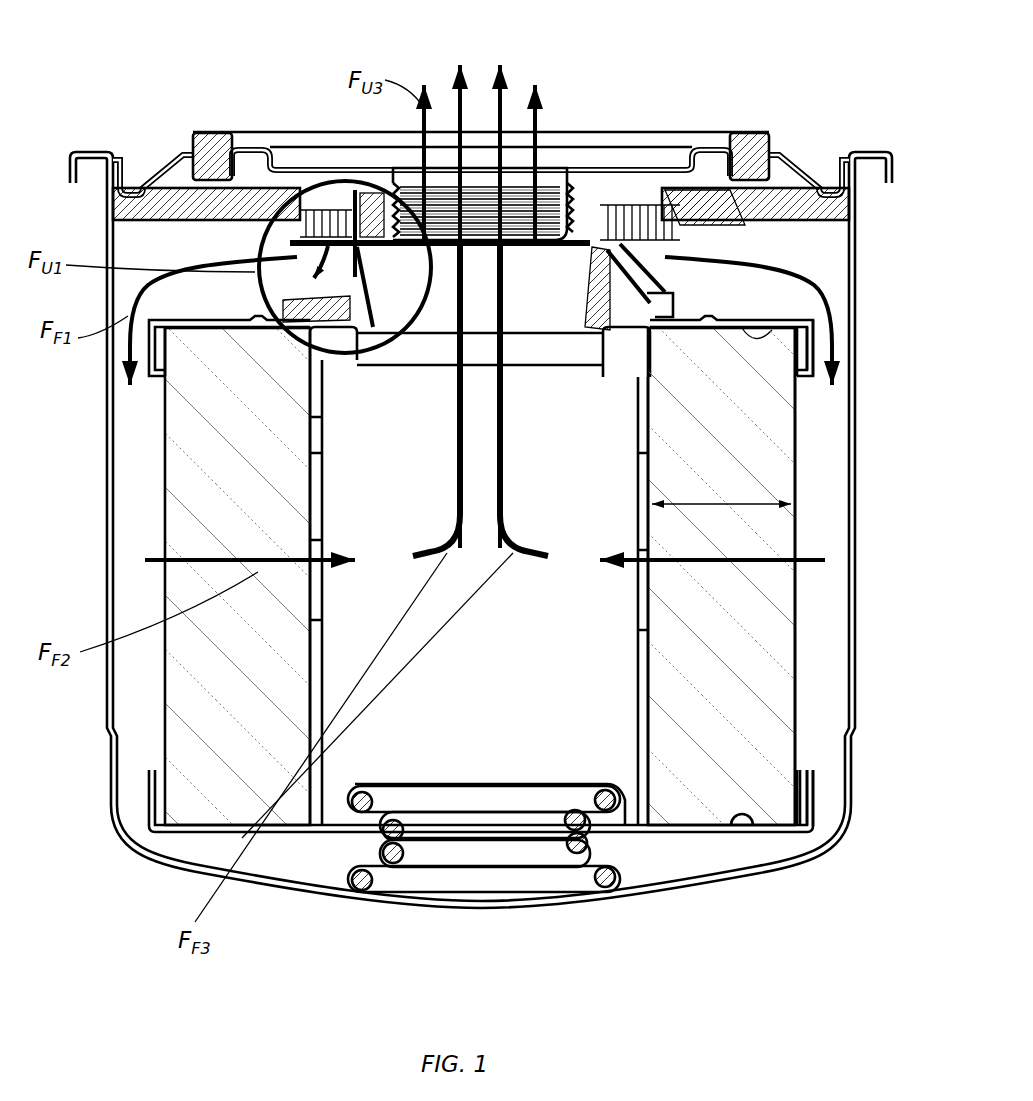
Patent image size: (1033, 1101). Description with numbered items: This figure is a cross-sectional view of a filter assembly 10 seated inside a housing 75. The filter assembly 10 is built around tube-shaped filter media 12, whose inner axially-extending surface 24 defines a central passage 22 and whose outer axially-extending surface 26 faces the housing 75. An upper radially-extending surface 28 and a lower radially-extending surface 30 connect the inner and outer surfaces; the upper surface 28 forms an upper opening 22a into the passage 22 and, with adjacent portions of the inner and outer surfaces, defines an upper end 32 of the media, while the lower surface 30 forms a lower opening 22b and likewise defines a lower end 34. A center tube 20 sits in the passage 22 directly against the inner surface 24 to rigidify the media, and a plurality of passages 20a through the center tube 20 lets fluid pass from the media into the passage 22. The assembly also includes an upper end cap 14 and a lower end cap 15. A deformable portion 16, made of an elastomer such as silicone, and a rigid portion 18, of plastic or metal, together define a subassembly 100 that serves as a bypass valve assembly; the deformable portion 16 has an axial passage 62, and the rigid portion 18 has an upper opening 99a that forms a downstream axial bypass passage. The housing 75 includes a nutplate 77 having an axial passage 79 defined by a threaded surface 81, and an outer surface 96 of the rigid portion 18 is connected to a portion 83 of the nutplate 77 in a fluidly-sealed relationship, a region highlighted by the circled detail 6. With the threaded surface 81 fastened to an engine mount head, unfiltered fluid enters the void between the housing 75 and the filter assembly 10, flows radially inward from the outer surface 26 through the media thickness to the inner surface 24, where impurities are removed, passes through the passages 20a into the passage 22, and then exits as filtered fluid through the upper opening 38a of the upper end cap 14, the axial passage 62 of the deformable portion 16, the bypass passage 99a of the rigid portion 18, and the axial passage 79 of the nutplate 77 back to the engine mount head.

The detail circle (FIG. 6 region) 6 is at (322, 184).
The filter assembly 10 is at (762, 288).
The filter media 12 is at (813, 530).
The upper end cap 14 is at (820, 338).
The lower end cap 15 is at (825, 808).
The deformable portion 16 is at (650, 238).
The rigid portion 18 is at (652, 289).
The center tube 20 is at (650, 705).
The plurality of passages 20a is at (633, 443).
The passage 22 is at (613, 625).
The upper opening 22a is at (622, 334).
The lower opening 22b is at (630, 805).
The inner axially-extending surface 24 is at (640, 728).
The outer axially-extending surface 26 is at (797, 745).
The upper radially-extending surface 28 is at (778, 327).
The lower radially-extending surface 30 is at (753, 825).
The upper end 32 is at (803, 355).
The lower end 34 is at (803, 795).
The upper opening 38a is at (529, 337).
The axial passage 62 is at (551, 298).
The housing 75 is at (104, 459).
The nutplate 77 is at (122, 206).
The axial passage 79 is at (542, 205).
The threaded surface 81 is at (556, 190).
The portion of the nutplate 83 is at (320, 183).
The outer surface 96 is at (598, 285).
The upper opening 99a is at (482, 216).
The subassembly 100 is at (906, 90).